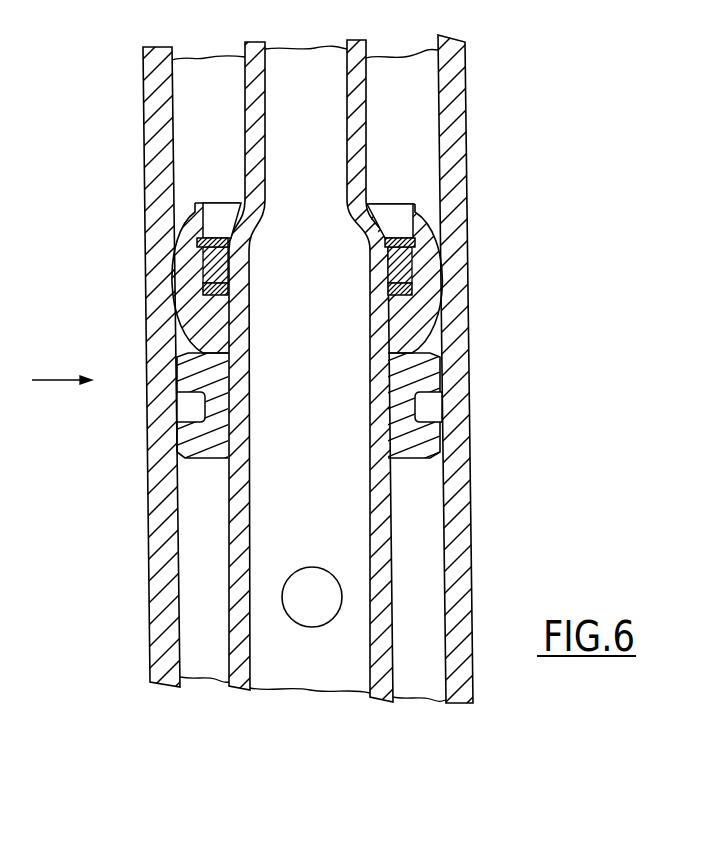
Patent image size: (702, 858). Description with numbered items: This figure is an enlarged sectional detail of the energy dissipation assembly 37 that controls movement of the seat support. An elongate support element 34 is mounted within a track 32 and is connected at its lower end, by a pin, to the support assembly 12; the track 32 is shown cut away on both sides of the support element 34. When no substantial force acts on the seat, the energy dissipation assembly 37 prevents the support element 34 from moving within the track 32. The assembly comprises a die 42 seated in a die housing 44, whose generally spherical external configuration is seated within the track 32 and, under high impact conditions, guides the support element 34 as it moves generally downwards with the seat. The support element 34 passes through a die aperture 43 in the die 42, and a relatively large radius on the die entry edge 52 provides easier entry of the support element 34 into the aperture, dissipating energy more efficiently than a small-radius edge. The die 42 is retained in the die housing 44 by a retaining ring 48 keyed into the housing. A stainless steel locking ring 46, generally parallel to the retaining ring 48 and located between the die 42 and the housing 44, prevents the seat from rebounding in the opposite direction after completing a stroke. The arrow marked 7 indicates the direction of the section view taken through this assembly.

The section line for FIG. 7 is at (52, 379).
The support assembly 12 is at (472, 502).
The track 32 is at (192, 68).
The support element 34 is at (368, 143).
The energy dissipation assembly 37 is at (351, 429).
The die 42 is at (400, 265).
The die aperture 43 is at (407, 238).
The die housing 44 is at (418, 333).
The locking ring 46 is at (203, 292).
The retaining ring 48 is at (195, 240).
The die entry edge 52 is at (407, 260).